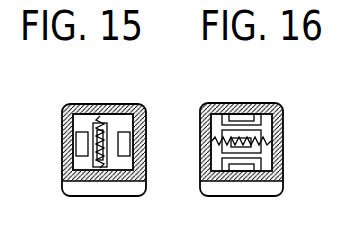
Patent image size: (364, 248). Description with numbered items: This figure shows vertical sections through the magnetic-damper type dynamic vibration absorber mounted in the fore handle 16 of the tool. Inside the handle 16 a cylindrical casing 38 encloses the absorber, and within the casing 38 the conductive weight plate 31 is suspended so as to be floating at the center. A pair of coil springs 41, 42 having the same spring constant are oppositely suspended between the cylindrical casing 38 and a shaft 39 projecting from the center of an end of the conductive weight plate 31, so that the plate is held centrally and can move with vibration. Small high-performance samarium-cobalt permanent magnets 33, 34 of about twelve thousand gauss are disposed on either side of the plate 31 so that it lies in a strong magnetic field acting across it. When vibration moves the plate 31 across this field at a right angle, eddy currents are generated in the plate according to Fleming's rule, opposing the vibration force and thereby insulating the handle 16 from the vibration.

In FIG. 15, the fore handle 16 is at (65, 160).
In FIG. 16, the fore handle 16 is at (280, 141).
In FIG. 15, the conductive weight plate 31 is at (79, 112).
In FIG. 15, the samarium-cobalt magnet 33 is at (127, 142).
In FIG. 16, the samarium-cobalt magnet 33 is at (244, 116).
In FIG. 15, the samarium-cobalt magnet 34 is at (78, 140).
In FIG. 16, the samarium-cobalt magnet 34 is at (243, 168).
In FIG. 15, the cylindrical casing 38 is at (93, 180).
In FIG. 16, the cylindrical casing 38 is at (263, 106).
In FIG. 15, the shaft 39 is at (126, 118).
In FIG. 16, the shaft 39 is at (245, 142).
In FIG. 15, the coil spring 41 is at (109, 121).
In FIG. 16, the coil spring 41 is at (272, 158).
In FIG. 15, the coil spring 42 is at (116, 170).
In FIG. 16, the coil spring 42 is at (211, 156).